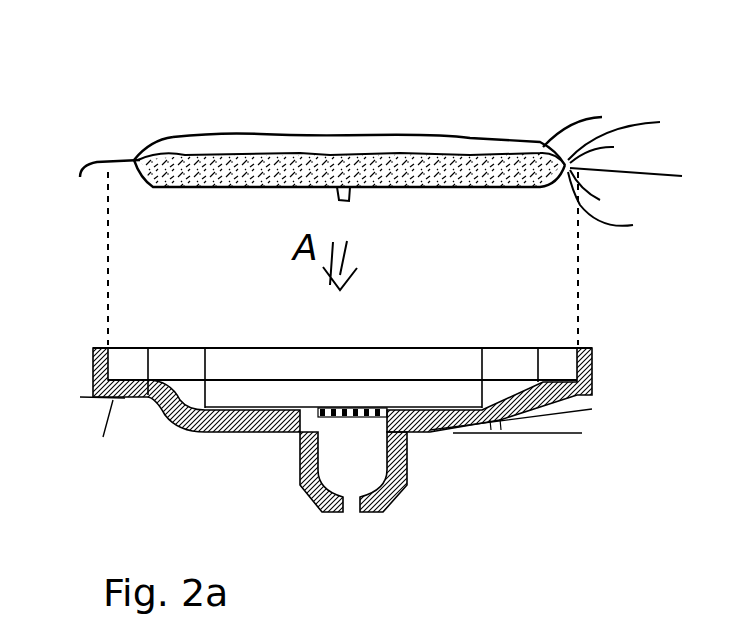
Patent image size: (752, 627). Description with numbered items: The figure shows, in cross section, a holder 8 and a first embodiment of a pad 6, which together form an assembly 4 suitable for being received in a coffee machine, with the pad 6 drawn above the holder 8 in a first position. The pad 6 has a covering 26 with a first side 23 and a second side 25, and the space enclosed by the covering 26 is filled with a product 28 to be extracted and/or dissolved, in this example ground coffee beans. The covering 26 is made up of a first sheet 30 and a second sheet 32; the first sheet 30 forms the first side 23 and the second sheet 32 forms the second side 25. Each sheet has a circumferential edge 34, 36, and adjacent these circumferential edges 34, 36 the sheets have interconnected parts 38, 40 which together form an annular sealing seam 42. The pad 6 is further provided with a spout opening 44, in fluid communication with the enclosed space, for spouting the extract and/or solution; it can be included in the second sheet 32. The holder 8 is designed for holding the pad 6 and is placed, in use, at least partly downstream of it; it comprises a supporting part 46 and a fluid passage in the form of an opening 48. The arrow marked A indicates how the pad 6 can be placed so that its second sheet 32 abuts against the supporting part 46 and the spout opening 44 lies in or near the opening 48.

The assembly 4 is at (657, 502).
The pad 6 is at (323, 170).
The holder 8 is at (490, 428).
The first side 23 is at (222, 112).
The second side 25 is at (468, 212).
The covering 26 is at (593, 121).
The product 28 is at (497, 188).
The first sheet 30 is at (368, 135).
The second sheet 32 is at (260, 190).
The circumferential edge 34 is at (610, 150).
The circumferential edge 36 is at (605, 197).
The interconnected part 38 is at (631, 133).
The interconnected part 40 is at (622, 208).
The annular sealing seam 42 is at (395, 189).
The spout opening 44 is at (350, 197).
The supporting part 46 is at (185, 423).
The opening 48 is at (346, 530).